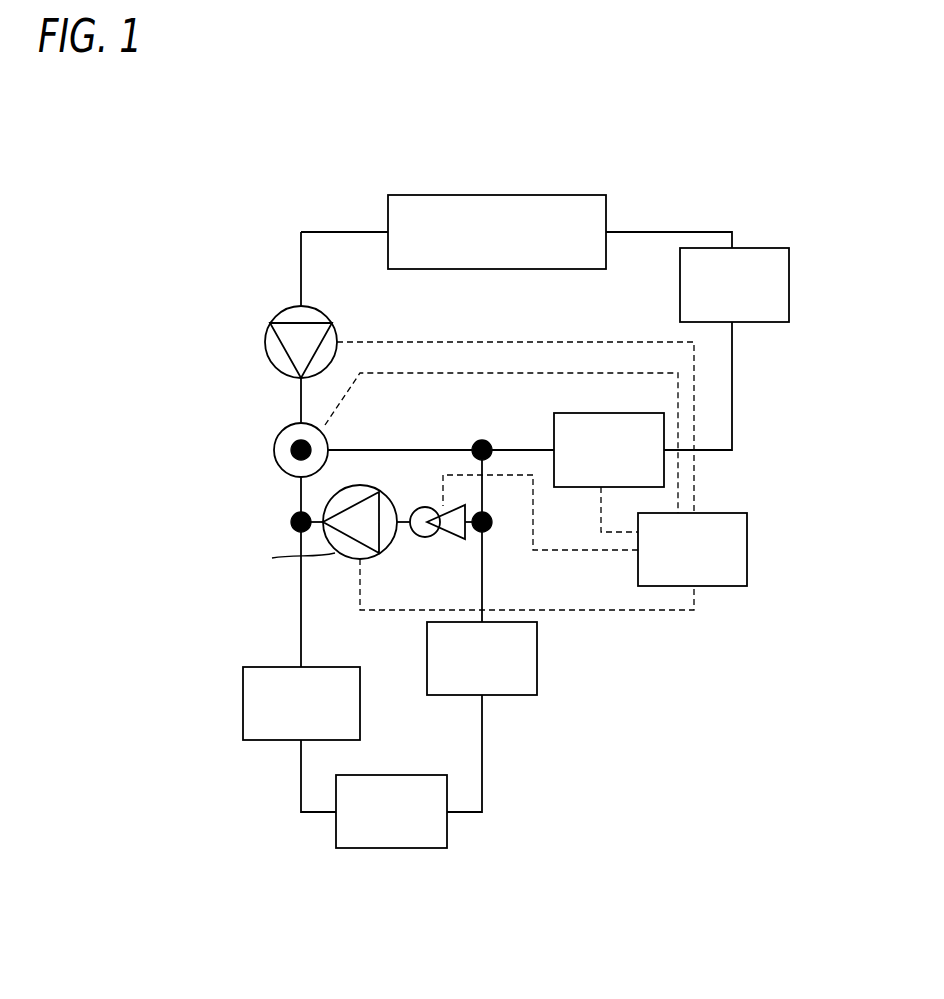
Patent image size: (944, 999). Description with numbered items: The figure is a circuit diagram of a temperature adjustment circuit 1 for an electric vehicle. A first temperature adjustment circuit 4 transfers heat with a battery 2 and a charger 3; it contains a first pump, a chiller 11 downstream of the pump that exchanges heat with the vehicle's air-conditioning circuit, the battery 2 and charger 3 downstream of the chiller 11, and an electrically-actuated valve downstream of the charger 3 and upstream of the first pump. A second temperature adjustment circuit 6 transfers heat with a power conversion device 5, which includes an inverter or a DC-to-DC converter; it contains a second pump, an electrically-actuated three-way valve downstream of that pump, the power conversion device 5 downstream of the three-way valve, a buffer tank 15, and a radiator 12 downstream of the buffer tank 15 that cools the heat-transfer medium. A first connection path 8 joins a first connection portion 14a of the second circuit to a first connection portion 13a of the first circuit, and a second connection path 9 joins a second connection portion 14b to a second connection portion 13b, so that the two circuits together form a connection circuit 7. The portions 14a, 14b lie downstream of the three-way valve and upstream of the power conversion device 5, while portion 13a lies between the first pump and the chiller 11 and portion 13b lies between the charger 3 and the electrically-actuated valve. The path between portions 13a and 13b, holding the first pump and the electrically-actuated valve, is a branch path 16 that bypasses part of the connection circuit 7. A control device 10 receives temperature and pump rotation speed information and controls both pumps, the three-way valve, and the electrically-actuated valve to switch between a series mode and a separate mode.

The temperature adjustment circuit 1 is at (745, 140).
The battery 2 is at (389, 848).
The charger 3 is at (537, 655).
The first temperature adjustment circuit 4 is at (301, 602).
The power conversion device 5 is at (664, 463).
The second temperature adjustment circuit 6 is at (301, 400).
The connection circuit 7 is at (117, 427).
The first connection path 8 is at (301, 498).
The second connection path 9 is at (482, 492).
The control device 10 is at (747, 550).
The chiller 11 is at (243, 707).
The radiator 12 is at (518, 195).
The first connection portion of the first temperature adjustment circuit 13a is at (290, 520).
The second connection portion of the first temperature adjustment circuit 13b is at (490, 530).
The first connection portion of the second temperature adjustment circuit 14a is at (295, 446).
The second connection portion of the second temperature adjustment circuit 14b is at (482, 440).
The buffer tank 15 is at (789, 277).
The branch path 16 is at (420, 507).